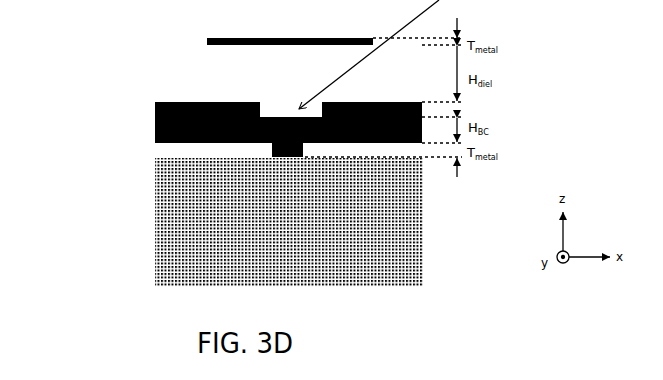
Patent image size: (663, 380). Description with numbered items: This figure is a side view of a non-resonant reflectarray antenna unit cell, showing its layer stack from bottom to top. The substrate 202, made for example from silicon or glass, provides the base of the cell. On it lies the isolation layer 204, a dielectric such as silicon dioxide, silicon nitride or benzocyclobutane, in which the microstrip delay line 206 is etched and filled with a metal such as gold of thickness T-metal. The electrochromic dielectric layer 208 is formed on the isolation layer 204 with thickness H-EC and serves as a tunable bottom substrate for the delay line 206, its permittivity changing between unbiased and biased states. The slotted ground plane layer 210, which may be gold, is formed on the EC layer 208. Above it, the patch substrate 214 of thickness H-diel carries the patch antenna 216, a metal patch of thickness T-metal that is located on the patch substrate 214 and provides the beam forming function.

The substrate 202 is at (153, 225).
The isolation layer 204 is at (153, 158).
The microstrip delay line 206 is at (293, 147).
The electrochromic (EC) dielectric layer 208 is at (152, 127).
The slotted ground plane layer 210 is at (153, 102).
The patch substrate 214 is at (152, 75).
The patch antenna 216 is at (205, 39).